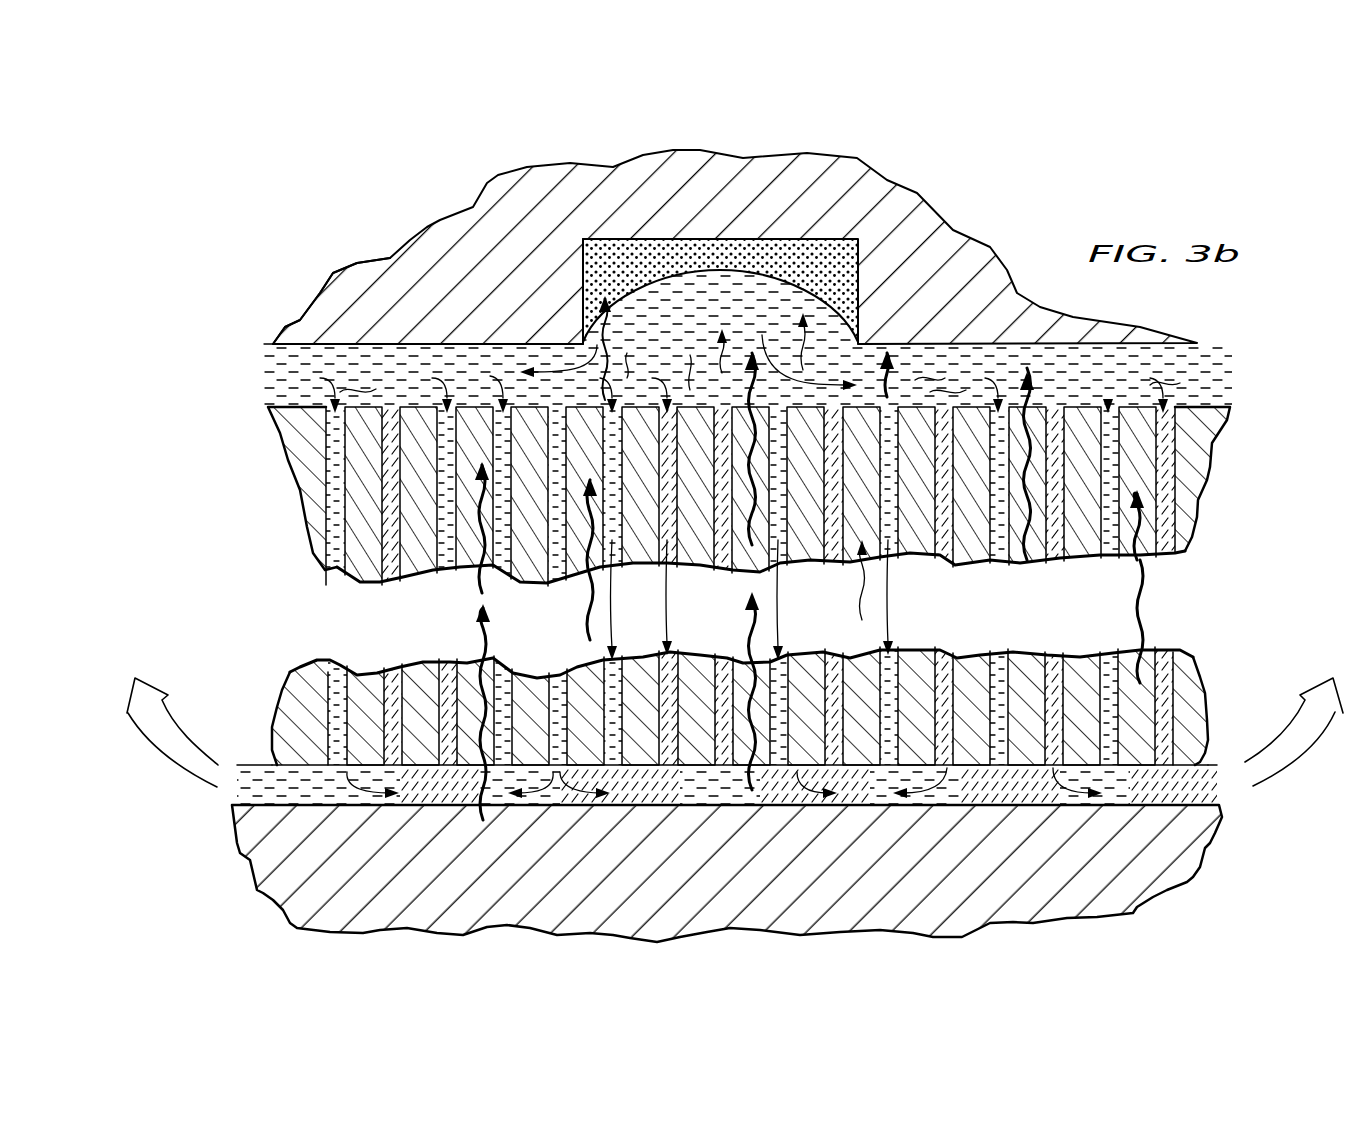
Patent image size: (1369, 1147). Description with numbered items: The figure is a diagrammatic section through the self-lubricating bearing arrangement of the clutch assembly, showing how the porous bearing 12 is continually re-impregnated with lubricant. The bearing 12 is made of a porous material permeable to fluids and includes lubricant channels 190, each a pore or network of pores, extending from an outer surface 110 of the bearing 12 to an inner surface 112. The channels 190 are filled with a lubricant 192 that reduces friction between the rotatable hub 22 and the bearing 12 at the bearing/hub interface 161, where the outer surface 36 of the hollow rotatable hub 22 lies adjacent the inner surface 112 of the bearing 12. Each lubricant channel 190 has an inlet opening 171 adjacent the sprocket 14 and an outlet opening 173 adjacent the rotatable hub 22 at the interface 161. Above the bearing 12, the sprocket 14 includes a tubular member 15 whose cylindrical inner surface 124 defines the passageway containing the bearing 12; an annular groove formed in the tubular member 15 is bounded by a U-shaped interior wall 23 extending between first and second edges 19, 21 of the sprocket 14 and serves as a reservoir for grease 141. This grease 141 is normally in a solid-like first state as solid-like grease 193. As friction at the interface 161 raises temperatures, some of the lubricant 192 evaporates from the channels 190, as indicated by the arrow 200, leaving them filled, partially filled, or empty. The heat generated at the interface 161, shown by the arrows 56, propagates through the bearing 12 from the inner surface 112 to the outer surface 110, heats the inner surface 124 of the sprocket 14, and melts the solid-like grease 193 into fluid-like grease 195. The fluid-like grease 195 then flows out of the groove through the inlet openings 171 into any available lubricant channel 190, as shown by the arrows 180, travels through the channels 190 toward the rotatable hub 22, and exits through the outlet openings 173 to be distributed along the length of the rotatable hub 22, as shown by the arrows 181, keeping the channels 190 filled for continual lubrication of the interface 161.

The sprocket 14 is at (995, 241).
The tubular member 15 is at (366, 263).
The U-shaped interior wall 23 is at (722, 243).
The grease 141 is at (575, 270).
The solid-like grease 193 is at (843, 257).
The first edge 19 is at (581, 338).
The second edge 21 is at (864, 339).
The inner surface 124 is at (290, 345).
The arrows 56 is at (612, 330).
The arrows 180 is at (635, 377).
The inlet opening 171 is at (1108, 400).
The fluid-like grease 195 is at (1200, 358).
The outer surface 110 is at (1232, 404).
The bearing 12 is at (1210, 528).
The lubricant channel 190 is at (333, 573).
The lubricant 192 is at (390, 567).
The arrow 200 is at (168, 771).
The bearing/hub interface 161 is at (226, 798).
The outlet opening 173 is at (328, 777).
The arrows 181 is at (380, 788).
The outer surface 36 is at (1220, 804).
The inner surface 112 is at (1200, 763).
The rotatable hub 22 is at (1207, 884).